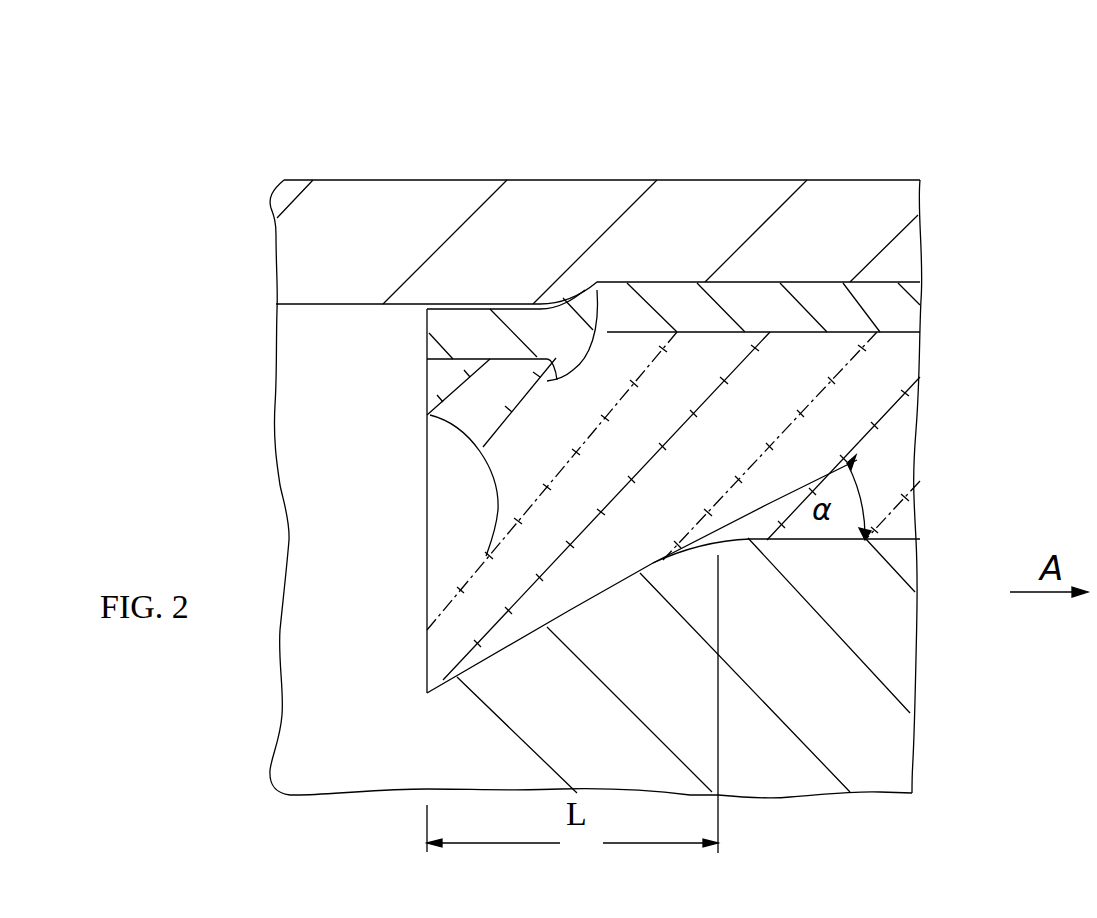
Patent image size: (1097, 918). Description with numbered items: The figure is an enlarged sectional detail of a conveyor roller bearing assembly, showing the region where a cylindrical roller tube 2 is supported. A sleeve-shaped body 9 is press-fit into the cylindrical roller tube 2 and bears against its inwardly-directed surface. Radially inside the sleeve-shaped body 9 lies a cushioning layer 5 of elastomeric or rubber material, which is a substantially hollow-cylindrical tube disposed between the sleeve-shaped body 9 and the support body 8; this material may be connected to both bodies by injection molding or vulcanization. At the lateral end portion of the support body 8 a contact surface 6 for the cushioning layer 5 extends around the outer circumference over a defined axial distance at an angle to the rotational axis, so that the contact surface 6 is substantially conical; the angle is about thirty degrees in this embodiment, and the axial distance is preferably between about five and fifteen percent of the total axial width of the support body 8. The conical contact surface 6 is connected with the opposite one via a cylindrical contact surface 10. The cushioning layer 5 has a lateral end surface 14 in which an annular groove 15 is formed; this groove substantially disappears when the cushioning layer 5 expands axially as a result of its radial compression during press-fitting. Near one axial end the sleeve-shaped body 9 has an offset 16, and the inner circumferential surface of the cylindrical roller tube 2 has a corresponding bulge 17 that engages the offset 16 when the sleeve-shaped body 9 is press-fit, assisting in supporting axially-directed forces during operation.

The cylindrical roller tube 2 is at (398, 197).
The cushioning layer 5 is at (893, 383).
The contact surface 6 is at (571, 611).
The support body 8 is at (898, 672).
The sleeve-shaped body 9 is at (775, 310).
The cylindrical contact surface 10 is at (893, 536).
The lateral end surface 14 is at (427, 467).
The annular groove 15 is at (482, 502).
The offset 16 is at (580, 303).
The bulge 17 is at (597, 285).